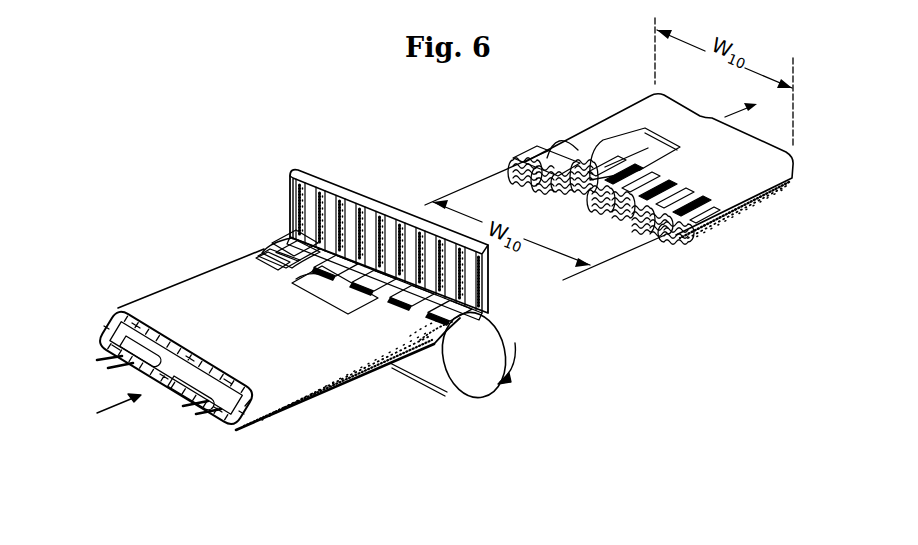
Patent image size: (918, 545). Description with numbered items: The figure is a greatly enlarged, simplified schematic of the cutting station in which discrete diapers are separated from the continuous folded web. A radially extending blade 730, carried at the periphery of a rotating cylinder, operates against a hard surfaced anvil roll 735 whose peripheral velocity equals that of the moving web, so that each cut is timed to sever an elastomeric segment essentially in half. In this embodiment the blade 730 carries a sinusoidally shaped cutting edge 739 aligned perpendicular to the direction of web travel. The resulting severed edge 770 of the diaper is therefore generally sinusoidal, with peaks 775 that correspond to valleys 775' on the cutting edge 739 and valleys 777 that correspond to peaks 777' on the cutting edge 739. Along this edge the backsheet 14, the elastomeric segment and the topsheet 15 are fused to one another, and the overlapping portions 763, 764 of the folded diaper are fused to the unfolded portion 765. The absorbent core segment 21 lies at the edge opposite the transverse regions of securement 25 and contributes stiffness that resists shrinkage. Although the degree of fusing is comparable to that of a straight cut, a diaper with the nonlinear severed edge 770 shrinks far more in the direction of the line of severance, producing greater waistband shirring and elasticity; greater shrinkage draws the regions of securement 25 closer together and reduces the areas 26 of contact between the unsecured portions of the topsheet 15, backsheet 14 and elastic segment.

The backsheet 14 is at (258, 329).
The topsheet 15 is at (166, 380).
The absorbent core segment 21 is at (116, 313).
The transverse regions of securement 25 is at (268, 250).
The areas of contact 26 is at (381, 268).
The radially extending blade 730 is at (291, 171).
The anvil roll 735 is at (470, 398).
The sinusoidally shaped cutting edge 739 is at (470, 320).
The overlapping portion 763 is at (530, 192).
The overlapping portion 764 is at (596, 219).
The unfolded portion 765 is at (579, 170).
The severed edge 770 is at (651, 237).
The peaks 775 is at (631, 237).
The valleys 775' is at (374, 291).
The valleys 777 is at (654, 195).
The peaks 777' is at (272, 210).